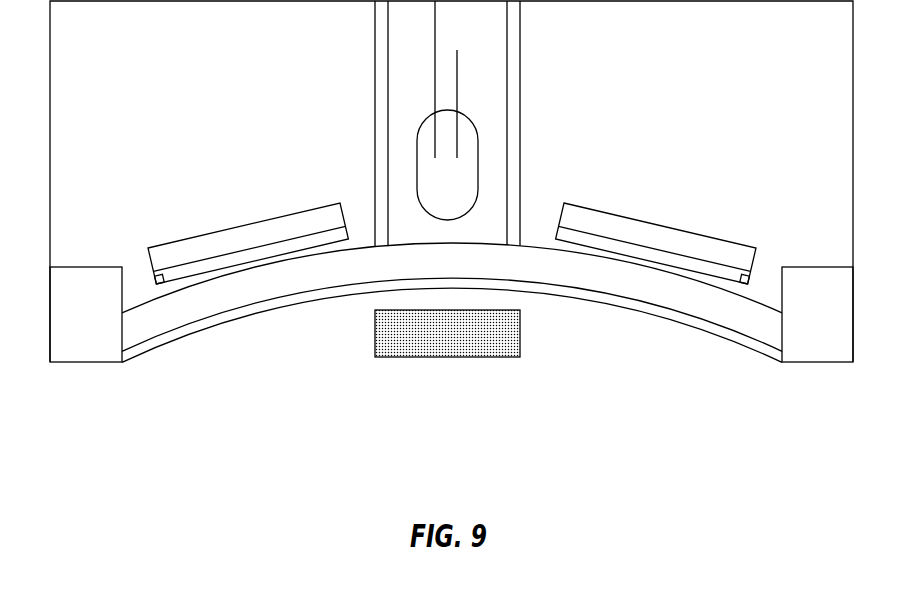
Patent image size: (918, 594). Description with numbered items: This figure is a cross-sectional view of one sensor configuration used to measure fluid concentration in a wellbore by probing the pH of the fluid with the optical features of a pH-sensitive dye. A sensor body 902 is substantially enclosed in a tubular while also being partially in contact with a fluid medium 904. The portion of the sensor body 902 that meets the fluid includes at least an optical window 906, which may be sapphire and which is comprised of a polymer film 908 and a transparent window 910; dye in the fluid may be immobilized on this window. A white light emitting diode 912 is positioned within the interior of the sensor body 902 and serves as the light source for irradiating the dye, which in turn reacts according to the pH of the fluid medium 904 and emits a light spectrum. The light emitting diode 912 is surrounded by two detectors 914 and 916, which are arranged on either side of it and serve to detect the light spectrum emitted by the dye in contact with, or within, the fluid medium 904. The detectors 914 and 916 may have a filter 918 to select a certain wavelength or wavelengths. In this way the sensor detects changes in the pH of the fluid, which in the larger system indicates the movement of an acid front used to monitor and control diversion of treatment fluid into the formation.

The sensor body 902 is at (92, 340).
The fluid medium 904 is at (427, 347).
The optical window 906 is at (580, 320).
The polymer film 908 is at (257, 314).
The transparent window 910 is at (655, 293).
The light emitting diode 912 is at (478, 155).
The detector 914 is at (697, 242).
The detector 916 is at (274, 221).
The filter 918 is at (602, 232).